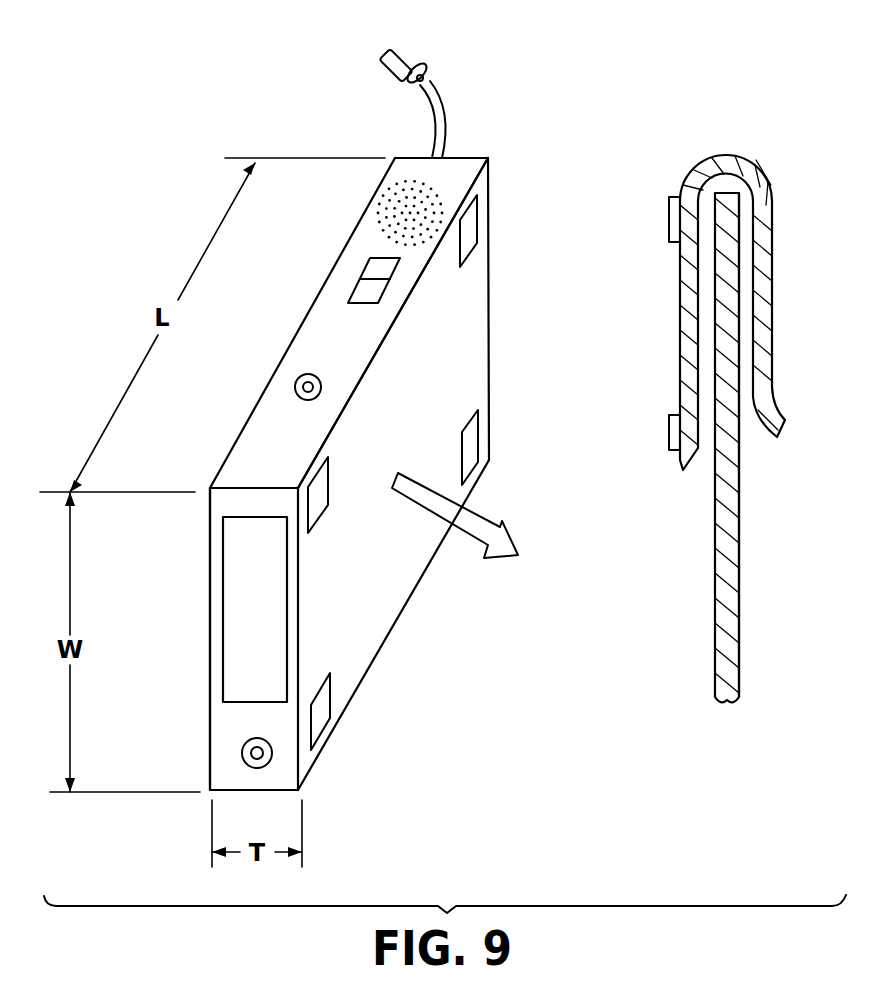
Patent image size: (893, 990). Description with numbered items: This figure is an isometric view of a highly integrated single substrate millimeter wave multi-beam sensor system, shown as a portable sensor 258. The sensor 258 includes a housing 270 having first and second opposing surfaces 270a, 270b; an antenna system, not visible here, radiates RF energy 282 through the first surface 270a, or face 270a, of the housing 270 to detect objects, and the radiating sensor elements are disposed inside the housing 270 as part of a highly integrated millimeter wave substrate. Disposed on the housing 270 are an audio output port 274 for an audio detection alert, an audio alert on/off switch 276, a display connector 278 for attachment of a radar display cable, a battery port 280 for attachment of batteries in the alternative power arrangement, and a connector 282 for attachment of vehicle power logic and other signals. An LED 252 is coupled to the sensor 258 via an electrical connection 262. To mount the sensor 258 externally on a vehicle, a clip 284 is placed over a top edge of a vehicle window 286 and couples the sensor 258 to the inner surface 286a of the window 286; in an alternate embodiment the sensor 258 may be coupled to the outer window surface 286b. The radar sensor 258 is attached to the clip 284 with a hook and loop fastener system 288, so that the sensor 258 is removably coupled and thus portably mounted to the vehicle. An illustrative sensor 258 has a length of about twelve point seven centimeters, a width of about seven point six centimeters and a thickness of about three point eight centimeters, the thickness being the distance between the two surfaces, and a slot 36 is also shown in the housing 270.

The slot 36 is at (317, 502).
The LED 252 is at (382, 53).
The portable sensor 258 is at (182, 811).
The electrical connection 262 is at (445, 112).
The housing 270 is at (405, 615).
The first surface 270a is at (456, 385).
The second surface 270b is at (208, 553).
The audio output port 274 is at (355, 227).
The audio alert on/off switch 276 is at (363, 288).
The display connector 278 is at (297, 387).
The battery port 280 is at (242, 618).
The connector 282 is at (518, 535).
The clip 284 is at (736, 155).
The vehicle window 286 is at (728, 728).
The inner surface 286a is at (715, 605).
The outer window surface 286b is at (741, 628).
The hook and loop fastener system 288 is at (470, 232).